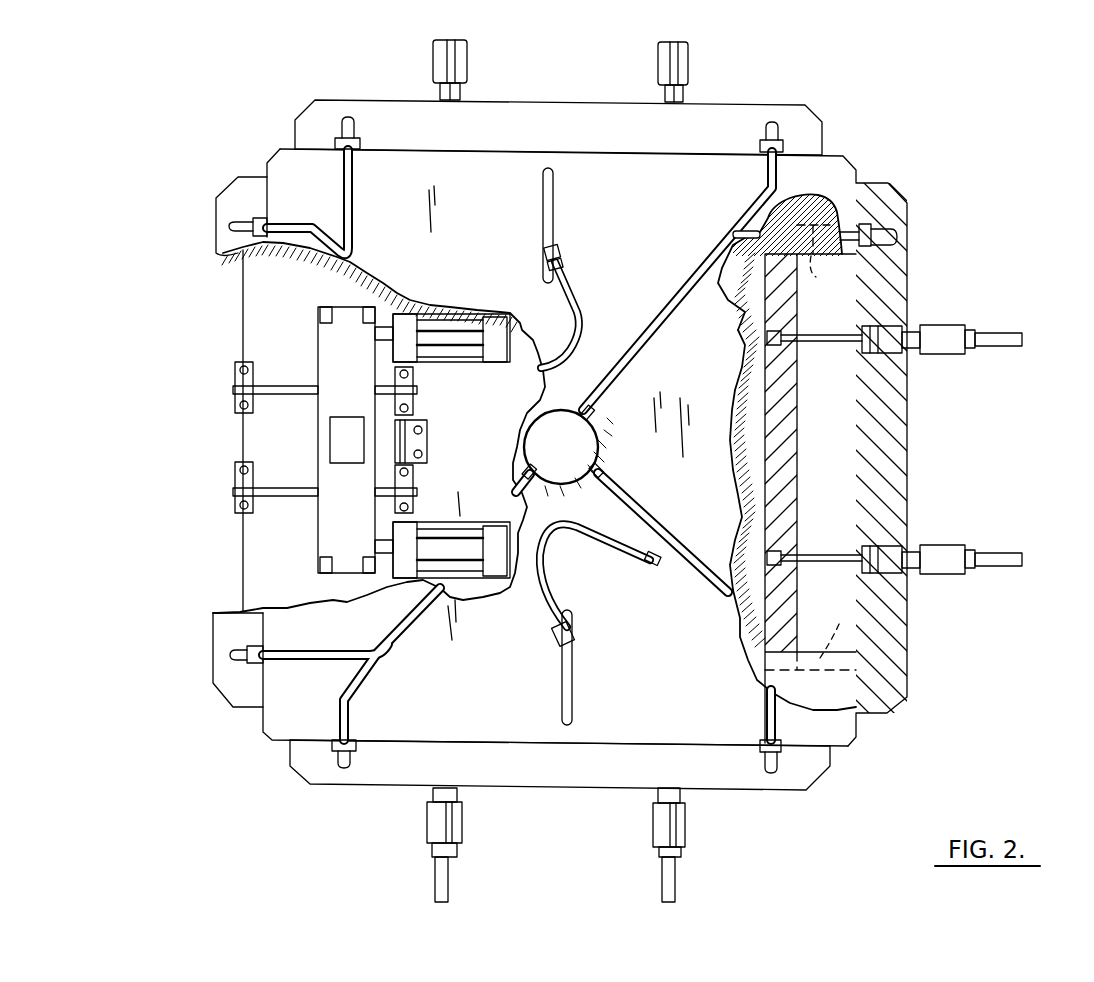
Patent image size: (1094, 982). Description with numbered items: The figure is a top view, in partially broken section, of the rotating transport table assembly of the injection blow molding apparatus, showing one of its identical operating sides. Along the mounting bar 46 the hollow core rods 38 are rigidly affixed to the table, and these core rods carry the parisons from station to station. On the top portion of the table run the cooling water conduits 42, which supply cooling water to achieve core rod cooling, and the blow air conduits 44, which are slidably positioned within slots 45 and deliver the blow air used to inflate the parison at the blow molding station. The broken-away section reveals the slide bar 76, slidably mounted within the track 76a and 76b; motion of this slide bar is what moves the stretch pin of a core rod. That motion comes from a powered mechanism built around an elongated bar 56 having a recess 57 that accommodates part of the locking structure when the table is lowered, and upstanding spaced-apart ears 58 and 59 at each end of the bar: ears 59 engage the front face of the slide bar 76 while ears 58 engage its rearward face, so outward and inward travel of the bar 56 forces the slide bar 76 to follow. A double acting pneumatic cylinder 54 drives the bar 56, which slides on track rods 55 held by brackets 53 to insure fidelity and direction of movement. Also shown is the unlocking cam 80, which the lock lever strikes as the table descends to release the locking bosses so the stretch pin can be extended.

The hollow core rods 38 is at (1010, 338).
The cooling water conduits 42 is at (356, 232).
The blow air conduits 44 is at (573, 300).
The slots 45 is at (549, 216).
The mounting bar 46 is at (552, 134).
The brackets 53 is at (235, 376).
The double acting pneumatic cylinder 54 is at (453, 337).
The track rods 55 is at (292, 396).
The bar 56 is at (330, 540).
The recess 57 is at (364, 426).
The ears 58 is at (363, 318).
The ears 59 is at (326, 305).
The slide bar 76 is at (780, 456).
The track 76a is at (843, 607).
The track 76b is at (857, 281).
The unlocking cam 80 is at (428, 444).